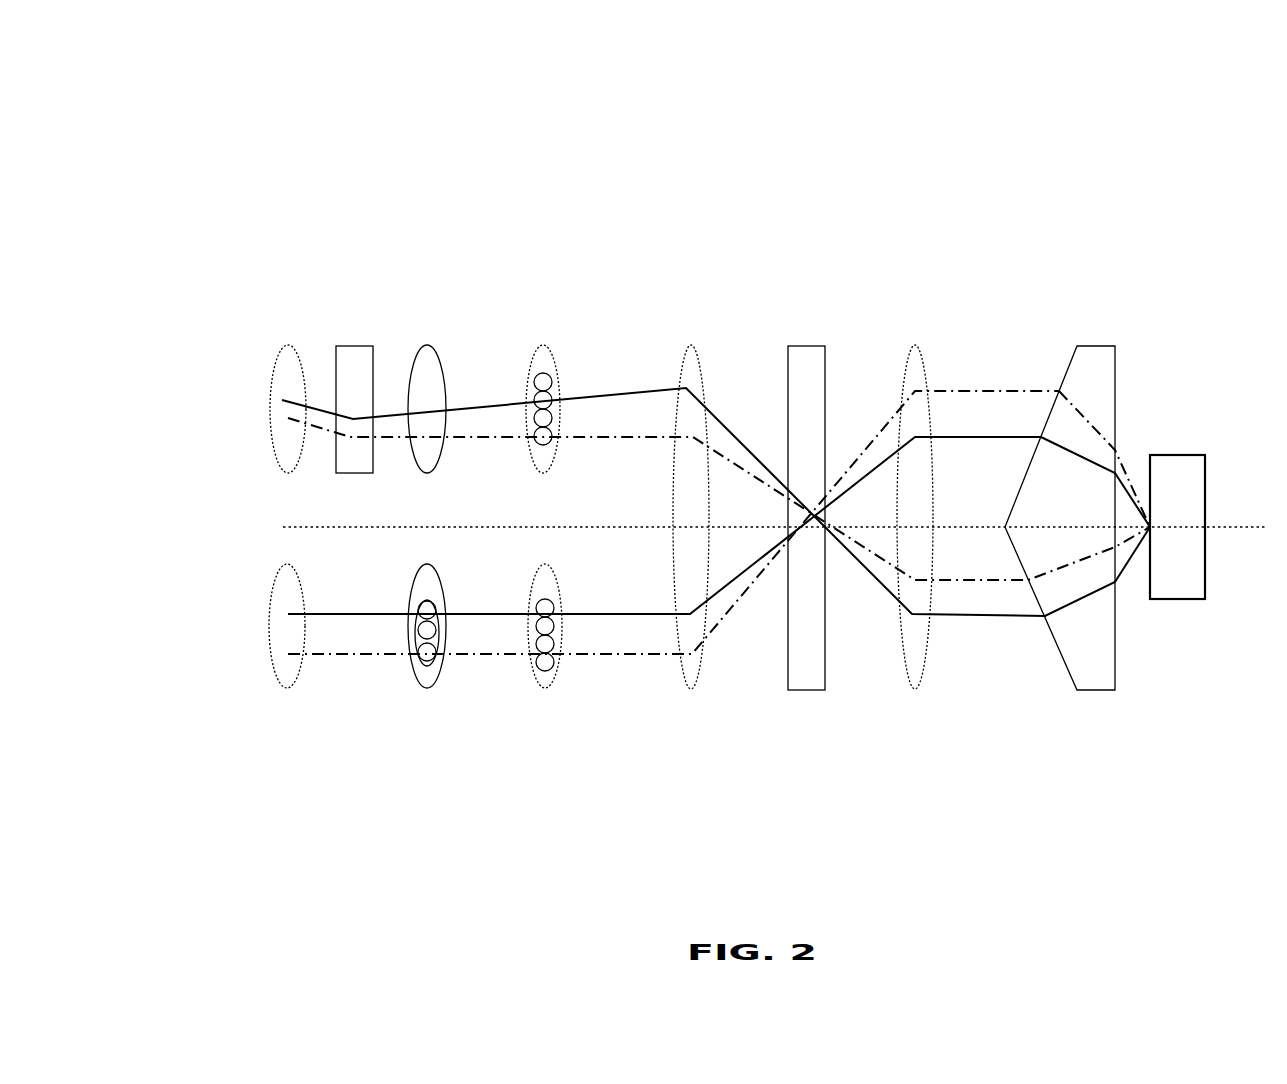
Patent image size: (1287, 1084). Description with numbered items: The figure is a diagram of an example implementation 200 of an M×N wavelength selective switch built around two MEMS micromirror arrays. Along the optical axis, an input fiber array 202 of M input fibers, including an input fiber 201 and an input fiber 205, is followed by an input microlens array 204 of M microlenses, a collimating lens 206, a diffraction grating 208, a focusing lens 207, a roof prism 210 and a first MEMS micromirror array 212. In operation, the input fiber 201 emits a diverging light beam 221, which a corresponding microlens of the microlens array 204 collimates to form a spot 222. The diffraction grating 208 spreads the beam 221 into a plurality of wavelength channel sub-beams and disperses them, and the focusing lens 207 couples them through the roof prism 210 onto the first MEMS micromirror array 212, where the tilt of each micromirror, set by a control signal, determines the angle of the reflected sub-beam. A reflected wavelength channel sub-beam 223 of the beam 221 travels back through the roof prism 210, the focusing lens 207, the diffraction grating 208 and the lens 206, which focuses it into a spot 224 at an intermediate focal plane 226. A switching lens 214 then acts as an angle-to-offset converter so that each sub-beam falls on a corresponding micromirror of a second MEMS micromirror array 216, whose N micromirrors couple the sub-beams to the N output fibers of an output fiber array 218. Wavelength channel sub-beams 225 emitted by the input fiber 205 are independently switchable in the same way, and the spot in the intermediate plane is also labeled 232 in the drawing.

The M×N wavelength selective switch 200 is at (236, 64).
The input fiber 201 is at (289, 671).
The input fiber array 202 is at (289, 671).
The input microlens array 204 is at (428, 639).
The input fiber 205 is at (289, 671).
The collimating lens 206 is at (690, 500).
The focusing lens 207 is at (910, 500).
The diffraction grating 208 is at (808, 500).
The roof prism 210 is at (1061, 500).
The first MEMS micromirror array 212 is at (1177, 513).
The switching lens 214 is at (428, 390).
The second MEMS micromirror array 216 is at (356, 390).
The output fiber array 218 is at (284, 390).
The diverging light beam 221 is at (664, 525).
The spot 222 is at (544, 648).
The reflected wavelength channel sub-beam 223 is at (1130, 560).
The spot 224 is at (546, 368).
The wavelength channel sub-beams 225 is at (673, 537).
The intermediate focal plane 226 is at (546, 383).
The light source array 232 is at (547, 397).